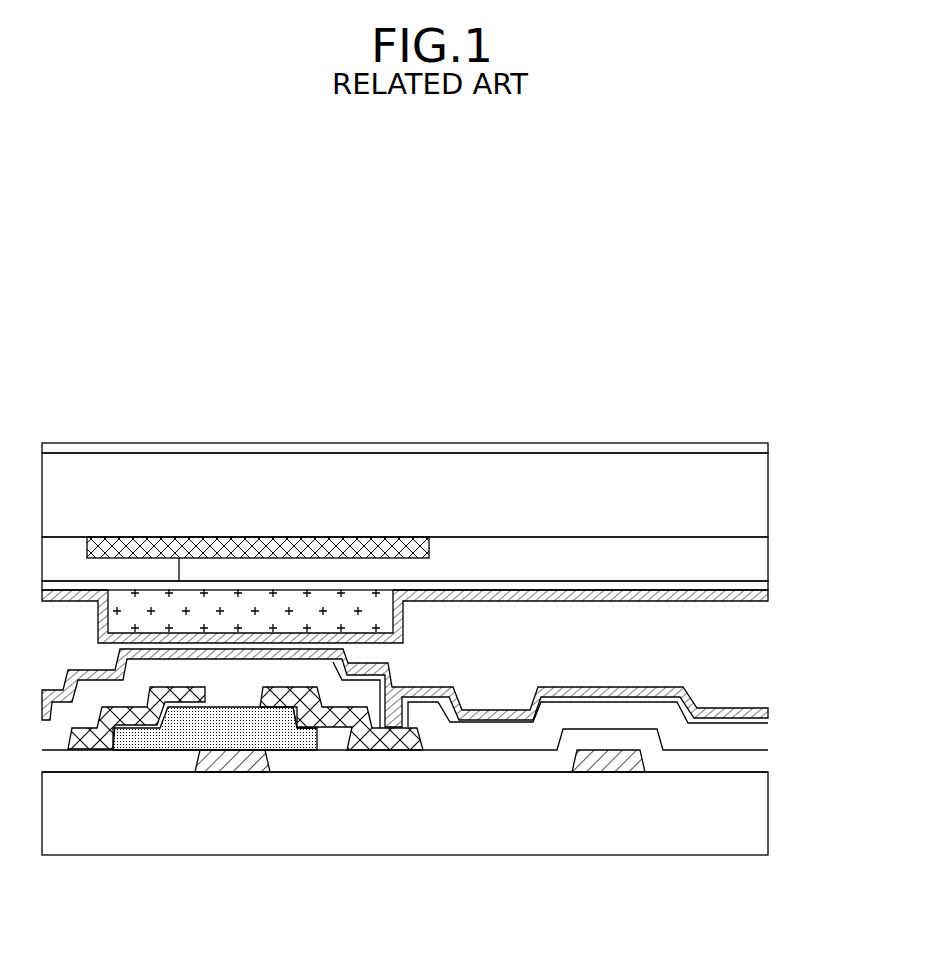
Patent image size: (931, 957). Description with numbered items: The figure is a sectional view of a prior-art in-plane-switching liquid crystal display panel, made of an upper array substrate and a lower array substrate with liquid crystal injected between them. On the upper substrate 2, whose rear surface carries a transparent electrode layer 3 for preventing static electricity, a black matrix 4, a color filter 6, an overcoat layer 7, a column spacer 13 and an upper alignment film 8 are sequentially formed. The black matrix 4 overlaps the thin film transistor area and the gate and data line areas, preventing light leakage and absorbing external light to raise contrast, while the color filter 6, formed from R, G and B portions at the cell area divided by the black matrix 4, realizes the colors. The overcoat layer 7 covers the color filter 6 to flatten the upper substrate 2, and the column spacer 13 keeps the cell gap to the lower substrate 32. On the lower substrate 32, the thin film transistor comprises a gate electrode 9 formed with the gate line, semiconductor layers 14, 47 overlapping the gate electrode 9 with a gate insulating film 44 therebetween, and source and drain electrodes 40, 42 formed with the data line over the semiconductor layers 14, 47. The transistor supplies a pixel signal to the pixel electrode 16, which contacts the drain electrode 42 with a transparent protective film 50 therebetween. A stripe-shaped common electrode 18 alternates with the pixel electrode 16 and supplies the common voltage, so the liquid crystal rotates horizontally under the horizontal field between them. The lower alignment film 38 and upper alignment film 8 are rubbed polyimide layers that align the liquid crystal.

The upper substrate 2 is at (768, 500).
The transparent electrode layer 3 is at (768, 447).
The black matrix 4 is at (229, 533).
The color filter 6 is at (768, 553).
The overcoat layer 7 is at (768, 583).
The upper alignment film 8 is at (768, 600).
The column spacer 13 is at (400, 612).
The lower alignment film 38 is at (768, 706).
The pixel electrode 16 is at (768, 720).
The protective film 50 is at (768, 737).
The semiconductor layer 14 is at (157, 748).
The semiconductor layer 47 is at (317, 727).
The source electrode 40 is at (172, 693).
The drain electrode 42 is at (303, 703).
The gate electrode 9 is at (230, 771).
The common electrode 18 is at (612, 767).
The gate insulating film 44 is at (464, 762).
The lower substrate 32 is at (768, 793).